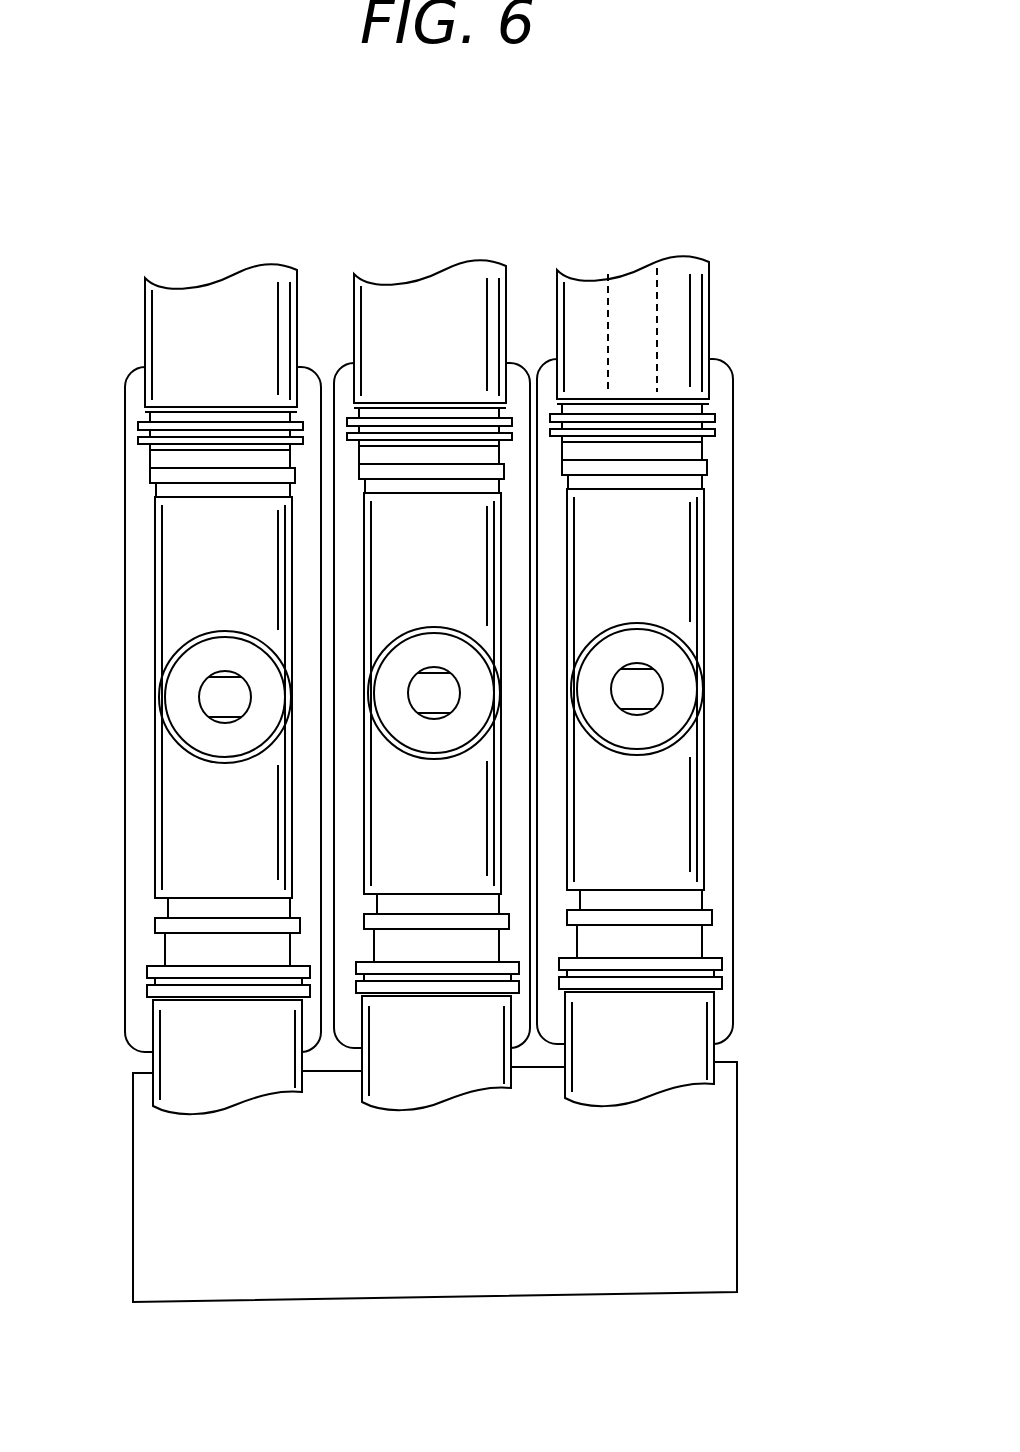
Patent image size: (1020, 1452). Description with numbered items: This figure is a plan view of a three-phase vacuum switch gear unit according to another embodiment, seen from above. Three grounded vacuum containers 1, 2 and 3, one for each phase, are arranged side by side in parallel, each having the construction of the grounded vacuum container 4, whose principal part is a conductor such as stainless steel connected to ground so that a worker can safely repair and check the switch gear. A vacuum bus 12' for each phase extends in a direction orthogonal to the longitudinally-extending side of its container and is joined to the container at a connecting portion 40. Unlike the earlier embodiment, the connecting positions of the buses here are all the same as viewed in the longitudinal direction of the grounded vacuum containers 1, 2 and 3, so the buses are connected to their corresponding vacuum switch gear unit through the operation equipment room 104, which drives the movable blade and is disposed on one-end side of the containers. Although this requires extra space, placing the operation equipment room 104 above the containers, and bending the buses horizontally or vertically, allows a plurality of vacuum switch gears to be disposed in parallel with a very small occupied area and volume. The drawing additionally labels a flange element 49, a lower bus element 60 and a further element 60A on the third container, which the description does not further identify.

The grounded vacuum container 1 is at (139, 872).
The grounded vacuum container 2 is at (528, 1030).
The grounded vacuum container 3 is at (723, 755).
The grounded vacuum container 4 is at (737, 842).
The vacuum bus 12' is at (680, 306).
The connecting portion 40 is at (705, 692).
The bushing flange 49 is at (712, 427).
The lower conductor 60 is at (703, 1012).
The insulating cylinder 60A is at (703, 573).
The operation equipment room 104 is at (730, 1123).